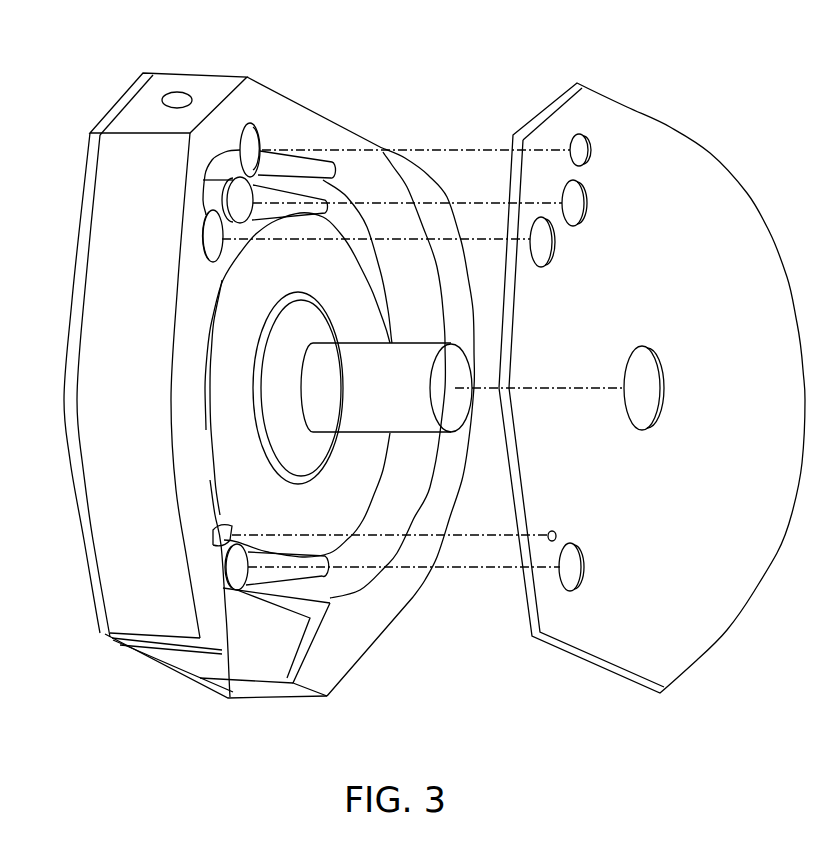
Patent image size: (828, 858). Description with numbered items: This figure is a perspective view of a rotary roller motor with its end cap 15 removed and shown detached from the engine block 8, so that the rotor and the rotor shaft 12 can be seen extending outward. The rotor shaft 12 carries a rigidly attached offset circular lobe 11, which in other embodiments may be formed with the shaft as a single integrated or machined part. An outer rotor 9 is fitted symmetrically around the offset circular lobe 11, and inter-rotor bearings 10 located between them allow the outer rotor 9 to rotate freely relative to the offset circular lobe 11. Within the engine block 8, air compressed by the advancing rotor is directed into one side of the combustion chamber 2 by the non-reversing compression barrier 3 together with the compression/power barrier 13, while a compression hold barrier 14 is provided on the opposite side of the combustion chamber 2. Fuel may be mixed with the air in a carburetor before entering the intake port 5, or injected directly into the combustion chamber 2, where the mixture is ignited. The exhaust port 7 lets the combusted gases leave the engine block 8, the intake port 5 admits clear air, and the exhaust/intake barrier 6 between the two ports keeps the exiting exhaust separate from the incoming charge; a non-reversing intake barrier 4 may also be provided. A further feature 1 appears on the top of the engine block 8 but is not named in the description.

The threaded hole 1 is at (183, 97).
The combustion chamber 2 is at (207, 175).
The non-reversing compression barrier 3 is at (207, 233).
The non-reversing intake barrier 4 is at (213, 535).
The intake port 5 is at (223, 618).
The exhaust/intake barrier 6 is at (230, 558).
The exhaust port 7 is at (340, 675).
The engine block 8 is at (358, 615).
The outer rotor 9 is at (330, 507).
The inter-rotor bearings 10 is at (312, 312).
The offset circular lobe 11 is at (303, 450).
The rotor shaft 12 is at (410, 343).
The compression/power barrier 13 is at (255, 188).
The compression hold barrier 14 is at (245, 133).
The end cap 15 is at (108, 594).